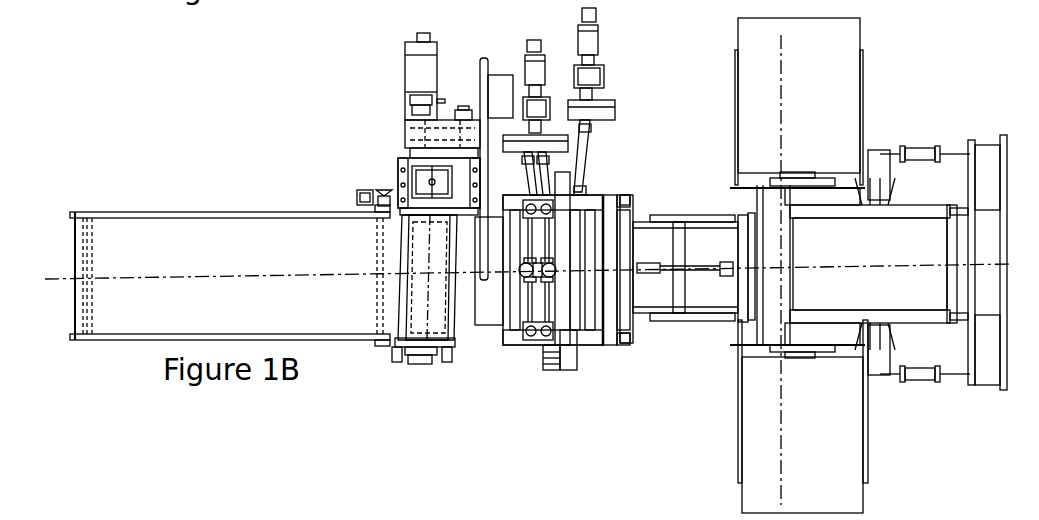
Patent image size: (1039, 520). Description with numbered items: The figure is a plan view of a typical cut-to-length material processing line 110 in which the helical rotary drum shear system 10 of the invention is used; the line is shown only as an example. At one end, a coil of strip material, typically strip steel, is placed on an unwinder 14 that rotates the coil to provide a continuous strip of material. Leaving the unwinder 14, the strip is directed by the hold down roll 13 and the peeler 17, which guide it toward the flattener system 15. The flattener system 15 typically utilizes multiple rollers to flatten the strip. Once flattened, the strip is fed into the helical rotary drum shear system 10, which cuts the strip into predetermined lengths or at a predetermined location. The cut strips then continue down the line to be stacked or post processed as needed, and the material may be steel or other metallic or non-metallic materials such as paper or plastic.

The helical rotary drum shear system 10 is at (418, 365).
The cut-to-length material processing line 110 is at (383, 88).
The hold down roll 13 is at (893, 253).
The unwinder 14 is at (832, 55).
The flattener system 15 is at (593, 196).
The peeler 17 is at (670, 322).